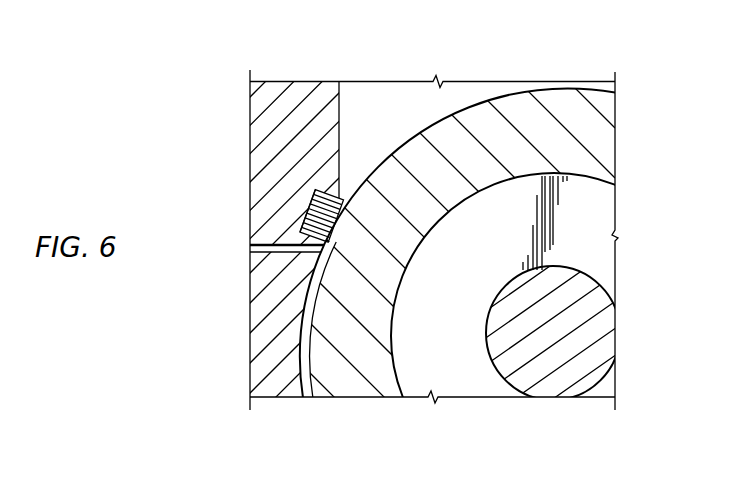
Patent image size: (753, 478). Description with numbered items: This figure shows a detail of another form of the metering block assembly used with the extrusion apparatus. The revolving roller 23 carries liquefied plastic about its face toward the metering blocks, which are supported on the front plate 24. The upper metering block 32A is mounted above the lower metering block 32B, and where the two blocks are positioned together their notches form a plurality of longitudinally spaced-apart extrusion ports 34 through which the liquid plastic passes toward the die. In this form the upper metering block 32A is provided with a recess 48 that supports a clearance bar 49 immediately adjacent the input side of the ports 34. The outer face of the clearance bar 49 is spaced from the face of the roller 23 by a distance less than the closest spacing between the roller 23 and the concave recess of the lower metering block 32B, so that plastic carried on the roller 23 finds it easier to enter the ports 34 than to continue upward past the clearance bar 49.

The roller 23 is at (466, 103).
The front plate 24 is at (486, 316).
The upper metering block 32A is at (341, 107).
The lower metering block 32B is at (250, 340).
The ports 34 is at (256, 243).
The recess 48 is at (338, 188).
The clearance bar 49 is at (307, 208).